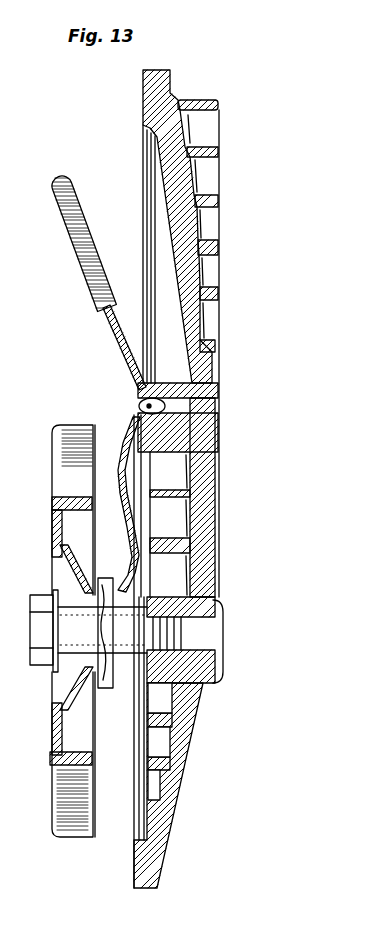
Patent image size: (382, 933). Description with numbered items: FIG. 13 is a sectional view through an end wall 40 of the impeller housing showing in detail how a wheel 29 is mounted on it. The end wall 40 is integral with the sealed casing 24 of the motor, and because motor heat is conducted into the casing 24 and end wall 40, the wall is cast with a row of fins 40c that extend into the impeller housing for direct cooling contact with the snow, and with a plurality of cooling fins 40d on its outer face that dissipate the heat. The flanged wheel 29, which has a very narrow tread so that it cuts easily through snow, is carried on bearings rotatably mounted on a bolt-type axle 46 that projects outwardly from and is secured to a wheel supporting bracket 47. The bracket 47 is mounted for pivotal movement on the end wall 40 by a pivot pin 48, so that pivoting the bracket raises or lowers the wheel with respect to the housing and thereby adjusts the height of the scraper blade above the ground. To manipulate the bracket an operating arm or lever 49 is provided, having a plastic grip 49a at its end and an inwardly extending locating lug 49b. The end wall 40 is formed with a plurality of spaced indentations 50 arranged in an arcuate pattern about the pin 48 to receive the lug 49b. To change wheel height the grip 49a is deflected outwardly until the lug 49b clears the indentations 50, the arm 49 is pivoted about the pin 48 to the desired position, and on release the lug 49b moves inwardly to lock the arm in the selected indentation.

The sealed casing 24 is at (187, 770).
The flanged-type wheel 29 is at (52, 820).
The end wall 40 is at (218, 443).
The row of fins 40c is at (212, 180).
The cooling fins 40d is at (177, 533).
The bolt-type axle 46 is at (33, 597).
The wheel supporting bracket 47 is at (102, 580).
The pivot pin 48 is at (185, 602).
The operating arm or lever 49 is at (115, 348).
The plastic grip 49a is at (72, 235).
The locating lug 49b is at (165, 407).
The indentations 50 is at (218, 378).